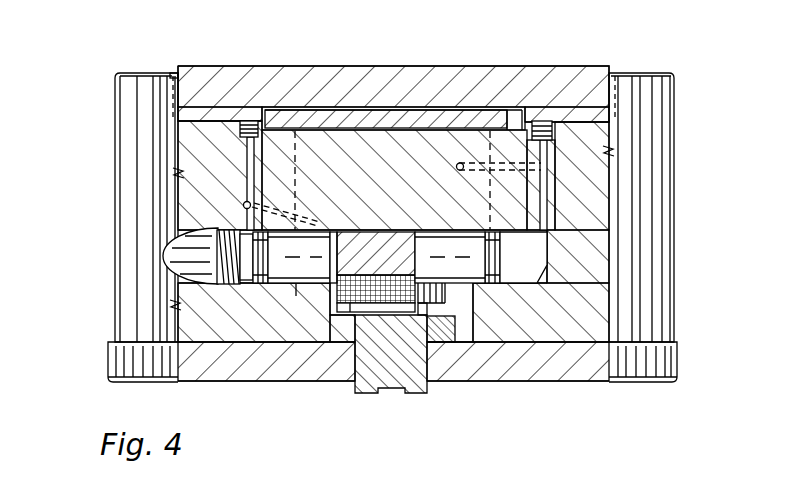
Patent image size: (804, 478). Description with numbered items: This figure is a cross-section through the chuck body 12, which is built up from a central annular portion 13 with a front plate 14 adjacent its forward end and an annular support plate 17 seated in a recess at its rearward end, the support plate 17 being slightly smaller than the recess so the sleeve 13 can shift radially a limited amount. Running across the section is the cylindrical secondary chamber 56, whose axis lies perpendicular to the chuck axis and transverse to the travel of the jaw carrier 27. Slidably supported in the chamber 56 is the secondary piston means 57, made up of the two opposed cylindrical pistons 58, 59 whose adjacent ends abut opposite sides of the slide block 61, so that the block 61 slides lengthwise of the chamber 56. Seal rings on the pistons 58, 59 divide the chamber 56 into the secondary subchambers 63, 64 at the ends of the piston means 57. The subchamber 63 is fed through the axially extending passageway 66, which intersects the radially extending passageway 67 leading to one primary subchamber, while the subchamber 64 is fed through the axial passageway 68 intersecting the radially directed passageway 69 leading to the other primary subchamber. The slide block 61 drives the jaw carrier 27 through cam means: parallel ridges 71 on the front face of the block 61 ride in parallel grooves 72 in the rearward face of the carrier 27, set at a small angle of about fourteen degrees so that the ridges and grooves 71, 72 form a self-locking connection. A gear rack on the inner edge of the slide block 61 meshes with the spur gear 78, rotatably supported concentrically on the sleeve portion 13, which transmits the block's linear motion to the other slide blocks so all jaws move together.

The chuck body 12 is at (108, 272).
The central annular portion 13 is at (595, 143).
The front plate 14 is at (550, 375).
The annular support plate 17 is at (575, 78).
The jaw carrier 27 is at (390, 362).
The secondary chamber 56 is at (550, 240).
The secondary piston means 57 is at (295, 292).
The piston 58 is at (318, 230).
The piston 59 is at (462, 248).
The slide block 61 is at (396, 245).
The secondary subchamber 63 is at (250, 280).
The secondary subchamber 64 is at (530, 270).
The axially extending passageway 66 is at (250, 157).
The radially extending passageway 67 is at (275, 212).
The axial passageway 68 is at (545, 193).
The radially directed passageway 69 is at (500, 150).
The ridges 71 is at (348, 308).
The grooves 72 is at (418, 313).
The spur gear 78 is at (440, 300).